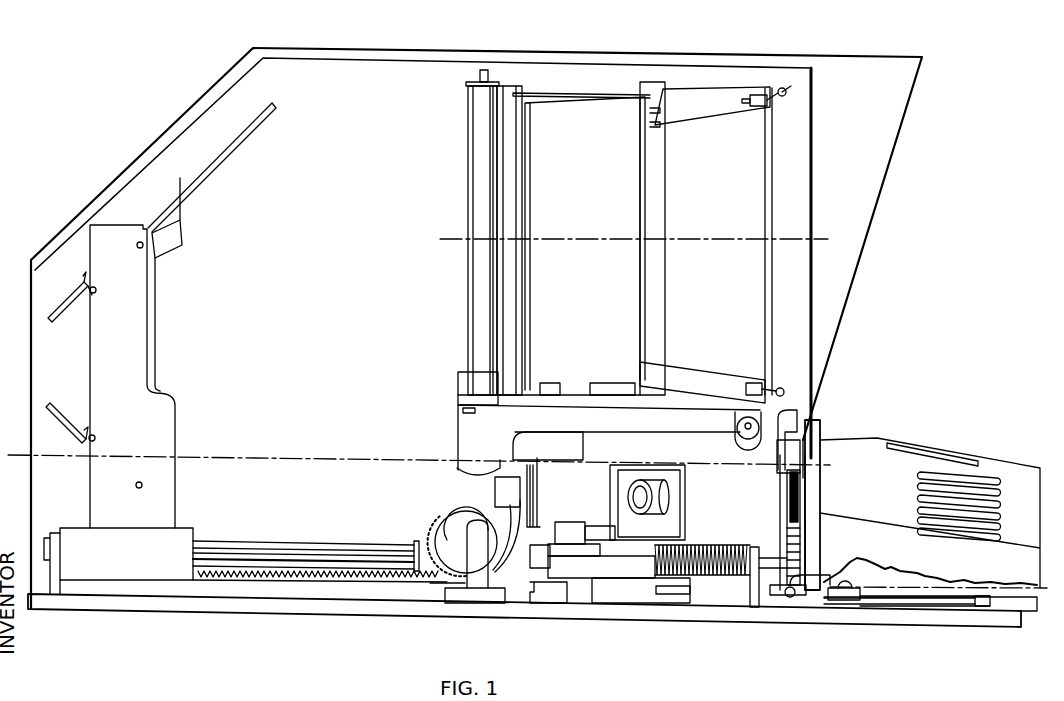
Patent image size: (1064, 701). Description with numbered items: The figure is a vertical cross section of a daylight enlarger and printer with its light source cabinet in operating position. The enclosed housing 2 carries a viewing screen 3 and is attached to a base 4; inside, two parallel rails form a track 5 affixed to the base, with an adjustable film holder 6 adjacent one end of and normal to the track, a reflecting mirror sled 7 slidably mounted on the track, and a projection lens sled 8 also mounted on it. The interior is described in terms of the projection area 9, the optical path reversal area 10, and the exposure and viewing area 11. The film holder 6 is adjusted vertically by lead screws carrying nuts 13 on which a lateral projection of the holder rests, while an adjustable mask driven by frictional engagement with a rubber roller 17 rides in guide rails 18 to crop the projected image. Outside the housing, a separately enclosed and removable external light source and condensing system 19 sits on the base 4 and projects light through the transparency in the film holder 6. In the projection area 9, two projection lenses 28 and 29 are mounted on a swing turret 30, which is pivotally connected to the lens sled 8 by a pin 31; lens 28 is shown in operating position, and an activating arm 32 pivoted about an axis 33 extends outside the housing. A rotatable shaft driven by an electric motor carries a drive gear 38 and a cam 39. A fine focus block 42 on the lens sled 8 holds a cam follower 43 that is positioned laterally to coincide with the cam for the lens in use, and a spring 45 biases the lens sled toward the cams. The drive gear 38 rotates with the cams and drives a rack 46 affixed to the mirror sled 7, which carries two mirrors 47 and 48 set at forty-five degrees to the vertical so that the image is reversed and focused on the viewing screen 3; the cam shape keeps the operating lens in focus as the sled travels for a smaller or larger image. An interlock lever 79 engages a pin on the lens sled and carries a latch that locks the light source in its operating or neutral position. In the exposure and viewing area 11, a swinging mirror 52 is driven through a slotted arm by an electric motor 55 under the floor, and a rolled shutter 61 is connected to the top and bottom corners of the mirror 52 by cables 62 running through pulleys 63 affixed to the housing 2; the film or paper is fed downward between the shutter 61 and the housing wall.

The enclosed housing 2 is at (708, 60).
The viewing screen 3 is at (810, 177).
The base 4 is at (440, 239).
The track 5 is at (315, 556).
The adjustable film holder 6 is at (812, 507).
The reflecting mirror sled 7 is at (158, 559).
The projection lens sled 8 is at (600, 563).
The projection area 9 is at (768, 486).
The optical path reversal area 10 is at (350, 70).
The exposure and viewing area 11 is at (520, 68).
The nuts 13 is at (797, 520).
The rubber roller 17 is at (755, 438).
The guide rails 18 is at (800, 420).
The external light source and condensing system housing 19 is at (904, 463).
The projection lens 28 is at (502, 488).
The projection lens 29 is at (663, 497).
The swing turret 30 is at (676, 535).
The pin 31 is at (595, 520).
The activating arm 32 is at (957, 602).
The axis 33 is at (843, 607).
The drive gear 38 is at (452, 534).
The cam 39 is at (462, 512).
The fine focus block 42 is at (612, 520).
The cam follower 43 is at (552, 545).
The spring 45 is at (732, 573).
The rack 46 is at (405, 575).
The mirror 47 is at (58, 423).
The mirror 48 is at (83, 290).
The swinging mirror 52 is at (603, 117).
The electric motor 55 is at (535, 447).
The rolled shutter 61 is at (480, 122).
The cables 62 is at (563, 90).
The pulleys 63 is at (793, 95).
The interlock lever 79 is at (670, 595).